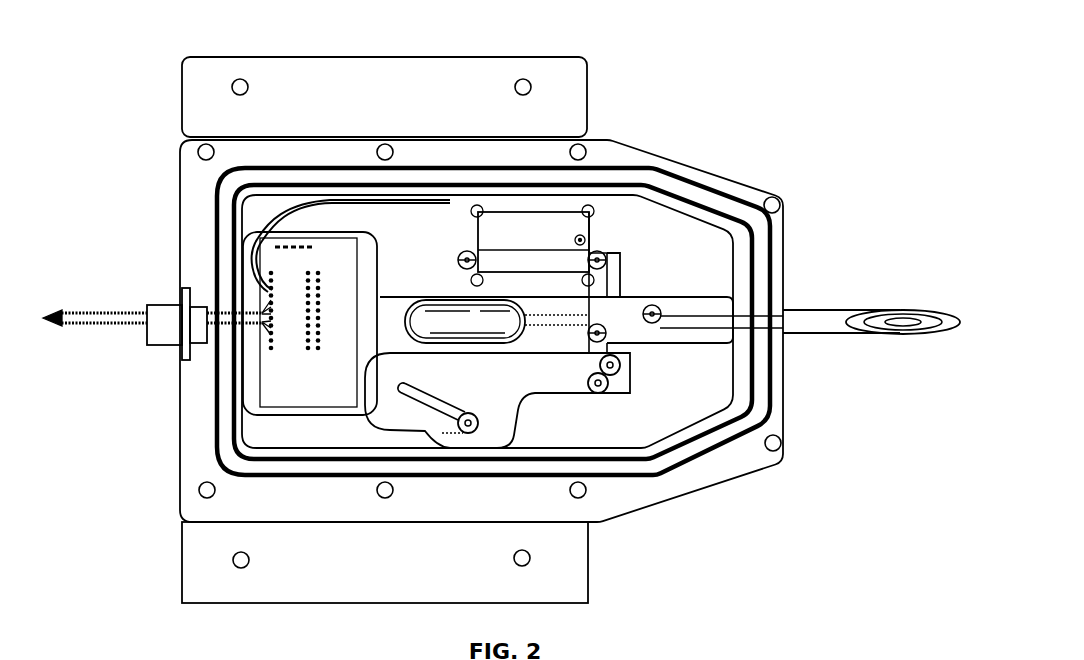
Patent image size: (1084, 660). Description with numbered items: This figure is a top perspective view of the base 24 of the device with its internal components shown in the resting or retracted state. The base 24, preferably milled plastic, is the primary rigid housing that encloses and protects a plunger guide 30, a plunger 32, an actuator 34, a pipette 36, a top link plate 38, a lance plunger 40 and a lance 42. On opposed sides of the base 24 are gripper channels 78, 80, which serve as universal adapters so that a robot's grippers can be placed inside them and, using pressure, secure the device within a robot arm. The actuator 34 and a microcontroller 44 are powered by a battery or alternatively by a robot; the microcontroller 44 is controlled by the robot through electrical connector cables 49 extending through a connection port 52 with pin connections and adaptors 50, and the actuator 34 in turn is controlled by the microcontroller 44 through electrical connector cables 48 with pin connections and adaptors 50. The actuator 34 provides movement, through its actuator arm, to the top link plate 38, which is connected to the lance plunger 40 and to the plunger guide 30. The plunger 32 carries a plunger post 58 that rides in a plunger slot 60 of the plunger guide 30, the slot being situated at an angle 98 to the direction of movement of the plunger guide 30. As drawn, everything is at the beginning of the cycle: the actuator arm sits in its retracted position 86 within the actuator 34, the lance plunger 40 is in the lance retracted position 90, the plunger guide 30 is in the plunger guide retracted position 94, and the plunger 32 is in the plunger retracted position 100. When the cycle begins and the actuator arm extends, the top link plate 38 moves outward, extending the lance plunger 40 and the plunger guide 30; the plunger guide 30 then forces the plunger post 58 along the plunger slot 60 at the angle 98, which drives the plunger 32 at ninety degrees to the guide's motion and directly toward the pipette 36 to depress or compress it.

The base 24 is at (156, 116).
The plunger guide 30 is at (417, 418).
The plunger 32 is at (642, 416).
The actuator 34 is at (618, 232).
The pipette 36 is at (502, 322).
The top link plate 38 is at (612, 297).
The lance plunger 40 is at (903, 330).
The lance 42 is at (820, 317).
The microcontroller 44 is at (277, 383).
The electrical connector cables 48 is at (333, 217).
The electrical connector cables 49 is at (92, 310).
The pin connections and adaptors 50 is at (258, 347).
The connection port 52 is at (165, 313).
The plunger post 58 is at (473, 372).
The plunger slot 60 is at (403, 423).
The gripper channel 78 is at (565, 588).
The gripper channel 80 is at (492, 78).
The retracted position 86 is at (558, 228).
The lance retracted position 90 is at (698, 300).
The plunger guide retracted position 94 is at (475, 350).
The angle 98 is at (433, 430).
The plunger retracted position 100 is at (473, 350).